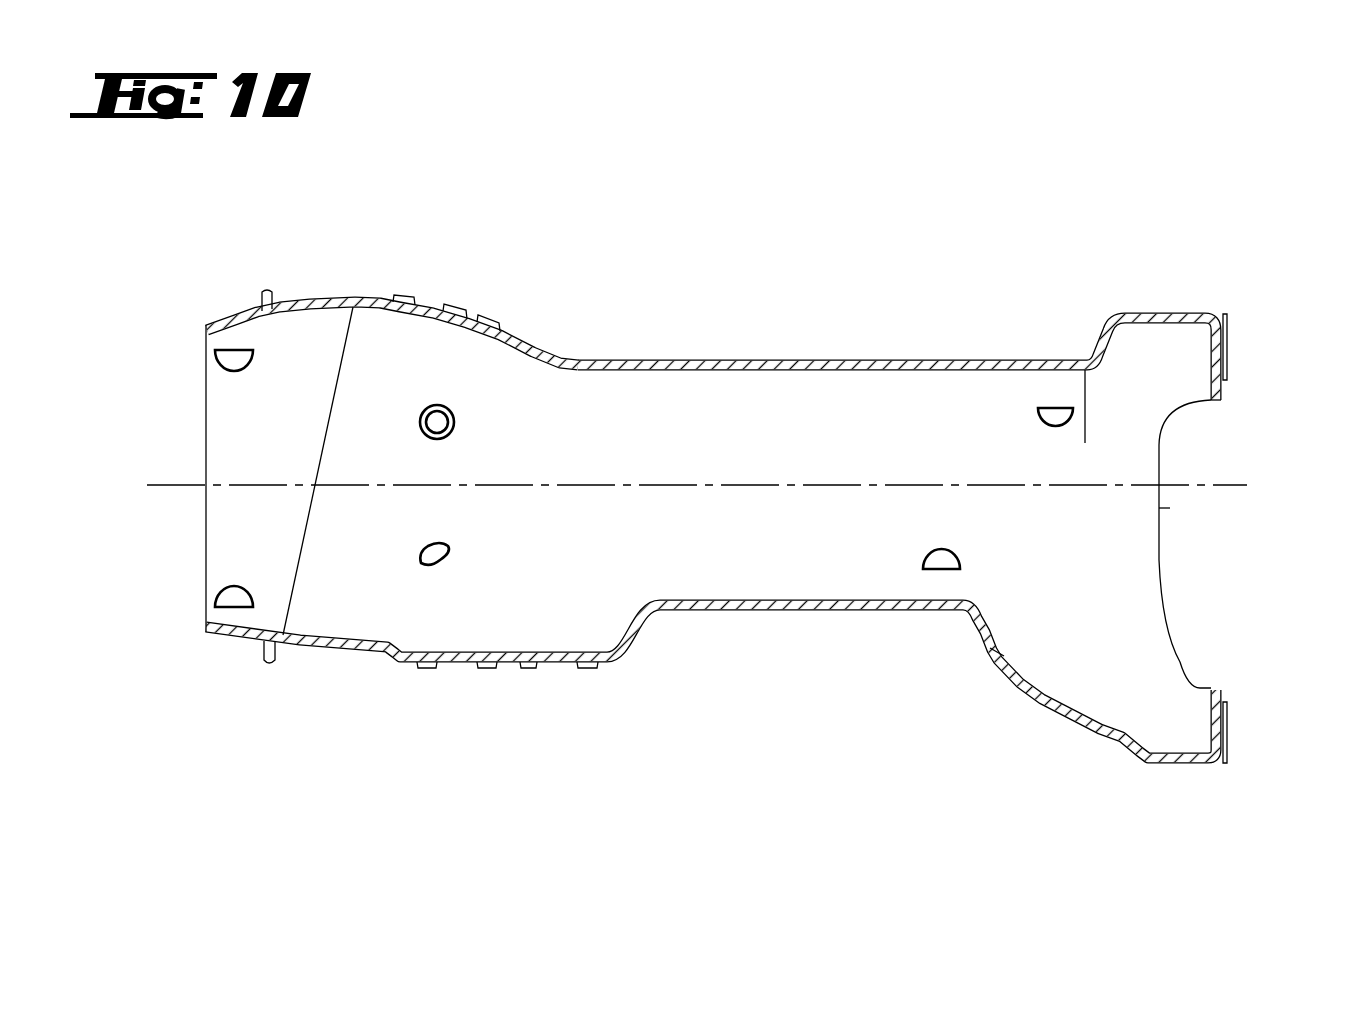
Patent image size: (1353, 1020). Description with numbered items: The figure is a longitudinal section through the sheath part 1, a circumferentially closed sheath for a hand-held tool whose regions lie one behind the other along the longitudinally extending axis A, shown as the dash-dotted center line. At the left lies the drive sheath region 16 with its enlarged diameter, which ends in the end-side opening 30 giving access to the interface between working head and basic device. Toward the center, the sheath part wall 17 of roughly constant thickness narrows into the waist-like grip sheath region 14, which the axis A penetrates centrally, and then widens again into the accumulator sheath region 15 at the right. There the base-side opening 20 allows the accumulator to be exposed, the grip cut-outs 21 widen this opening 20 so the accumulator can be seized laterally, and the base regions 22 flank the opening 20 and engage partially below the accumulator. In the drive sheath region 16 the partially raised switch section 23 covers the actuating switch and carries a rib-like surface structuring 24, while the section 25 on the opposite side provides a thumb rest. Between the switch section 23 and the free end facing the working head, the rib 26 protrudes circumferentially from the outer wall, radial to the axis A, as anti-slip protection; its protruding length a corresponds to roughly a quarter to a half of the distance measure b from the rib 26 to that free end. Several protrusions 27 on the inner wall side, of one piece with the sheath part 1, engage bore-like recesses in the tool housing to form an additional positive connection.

The sheath part 1 is at (854, 313).
The grip sheath region 14 is at (799, 607).
The accumulator sheath region 15 is at (1033, 700).
The drive sheath region 16 is at (352, 648).
The sheath part wall 17 is at (660, 360).
The opening 20 is at (1208, 598).
The grip cut-outs 21 is at (1160, 507).
The base regions 22 is at (1223, 358).
The switch section 23 is at (512, 665).
The rib-like surface structuring 24 is at (428, 300).
The section 25 is at (480, 318).
The rib 26 is at (260, 296).
The protrusion 27 is at (232, 353).
The opening 30 is at (206, 478).
The length a is at (292, 240).
The distance measure b is at (268, 258).
The longitudinally extending axis A is at (1222, 487).